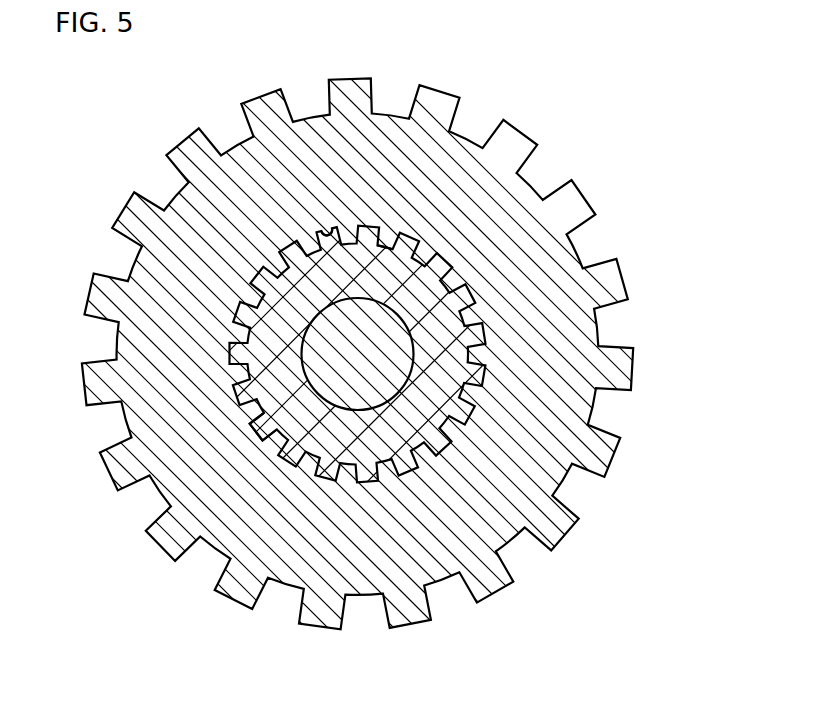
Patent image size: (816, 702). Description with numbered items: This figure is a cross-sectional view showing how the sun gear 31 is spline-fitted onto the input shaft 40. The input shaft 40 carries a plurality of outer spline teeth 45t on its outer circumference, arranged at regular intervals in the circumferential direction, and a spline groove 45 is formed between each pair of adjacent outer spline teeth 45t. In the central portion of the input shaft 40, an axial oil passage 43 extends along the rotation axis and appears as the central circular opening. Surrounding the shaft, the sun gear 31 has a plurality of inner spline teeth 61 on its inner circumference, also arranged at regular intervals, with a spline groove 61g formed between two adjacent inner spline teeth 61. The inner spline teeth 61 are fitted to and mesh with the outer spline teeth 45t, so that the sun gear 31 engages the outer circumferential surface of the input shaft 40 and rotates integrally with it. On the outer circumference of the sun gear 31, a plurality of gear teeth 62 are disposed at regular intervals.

The sun gear 31 is at (357, 335).
The gear teeth 62 is at (572, 207).
The inner spline teeth 61 is at (390, 240).
The spline groove 61g is at (326, 229).
The input shaft 40 is at (411, 450).
The spline groove 45 is at (288, 440).
The outer spline teeth 45t is at (275, 437).
The axial oil passage 43 is at (363, 383).